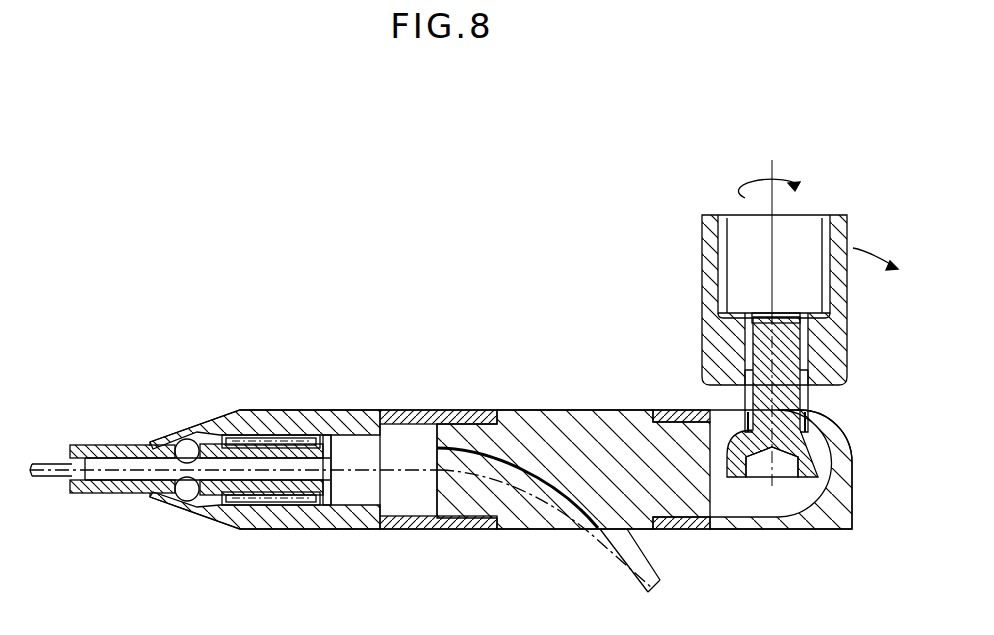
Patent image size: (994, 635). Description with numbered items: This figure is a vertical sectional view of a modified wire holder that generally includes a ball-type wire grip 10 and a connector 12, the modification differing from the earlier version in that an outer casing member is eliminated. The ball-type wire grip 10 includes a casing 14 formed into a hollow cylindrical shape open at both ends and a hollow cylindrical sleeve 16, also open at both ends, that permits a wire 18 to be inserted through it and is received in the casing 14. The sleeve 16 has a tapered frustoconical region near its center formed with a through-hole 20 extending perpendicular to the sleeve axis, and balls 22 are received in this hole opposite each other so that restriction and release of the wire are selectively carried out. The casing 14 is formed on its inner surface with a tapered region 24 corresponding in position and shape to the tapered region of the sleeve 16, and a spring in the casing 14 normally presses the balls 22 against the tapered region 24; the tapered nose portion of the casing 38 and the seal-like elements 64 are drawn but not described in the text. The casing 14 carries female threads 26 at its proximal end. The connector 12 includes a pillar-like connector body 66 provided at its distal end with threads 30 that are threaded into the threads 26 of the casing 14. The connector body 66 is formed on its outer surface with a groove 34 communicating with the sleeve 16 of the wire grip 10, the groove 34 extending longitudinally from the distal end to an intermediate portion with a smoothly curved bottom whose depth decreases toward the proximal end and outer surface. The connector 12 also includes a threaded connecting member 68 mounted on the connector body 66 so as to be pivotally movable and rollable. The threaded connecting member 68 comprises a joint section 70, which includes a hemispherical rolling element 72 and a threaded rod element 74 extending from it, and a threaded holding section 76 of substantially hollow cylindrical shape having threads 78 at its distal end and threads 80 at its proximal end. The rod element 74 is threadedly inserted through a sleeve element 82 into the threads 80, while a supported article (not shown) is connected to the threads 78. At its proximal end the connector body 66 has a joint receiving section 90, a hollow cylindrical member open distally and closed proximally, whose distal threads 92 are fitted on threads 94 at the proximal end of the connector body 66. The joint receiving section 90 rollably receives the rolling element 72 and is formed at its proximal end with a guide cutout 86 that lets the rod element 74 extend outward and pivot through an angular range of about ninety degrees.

The ball-type wire grip 10 is at (182, 521).
The connector 12 is at (566, 400).
The casing 14 is at (258, 528).
The sleeve 16 is at (112, 445).
The wire 18 is at (44, 463).
The through-hole 20 is at (189, 441).
The balls 22 is at (179, 442).
The tapered region 24 is at (215, 428).
The threads 26 is at (434, 529).
The threads 30 is at (467, 417).
The groove 34 is at (546, 524).
The tapered nose 38 is at (222, 515).
The seal 64 is at (318, 507).
The connector body 66 is at (597, 417).
The threaded connecting member 68 is at (686, 268).
The joint section 70 is at (765, 482).
The hemispherical rolling element 72 is at (813, 446).
The threaded rod element 74 is at (805, 395).
The threaded holding section 76 is at (840, 315).
The threads 78 is at (727, 260).
The threads 80 is at (797, 320).
The sleeve element 82 is at (803, 422).
The guide cutout 86 is at (843, 473).
The joint receiving section 90 is at (792, 530).
The threads 92 is at (700, 530).
The threads 94 is at (673, 416).